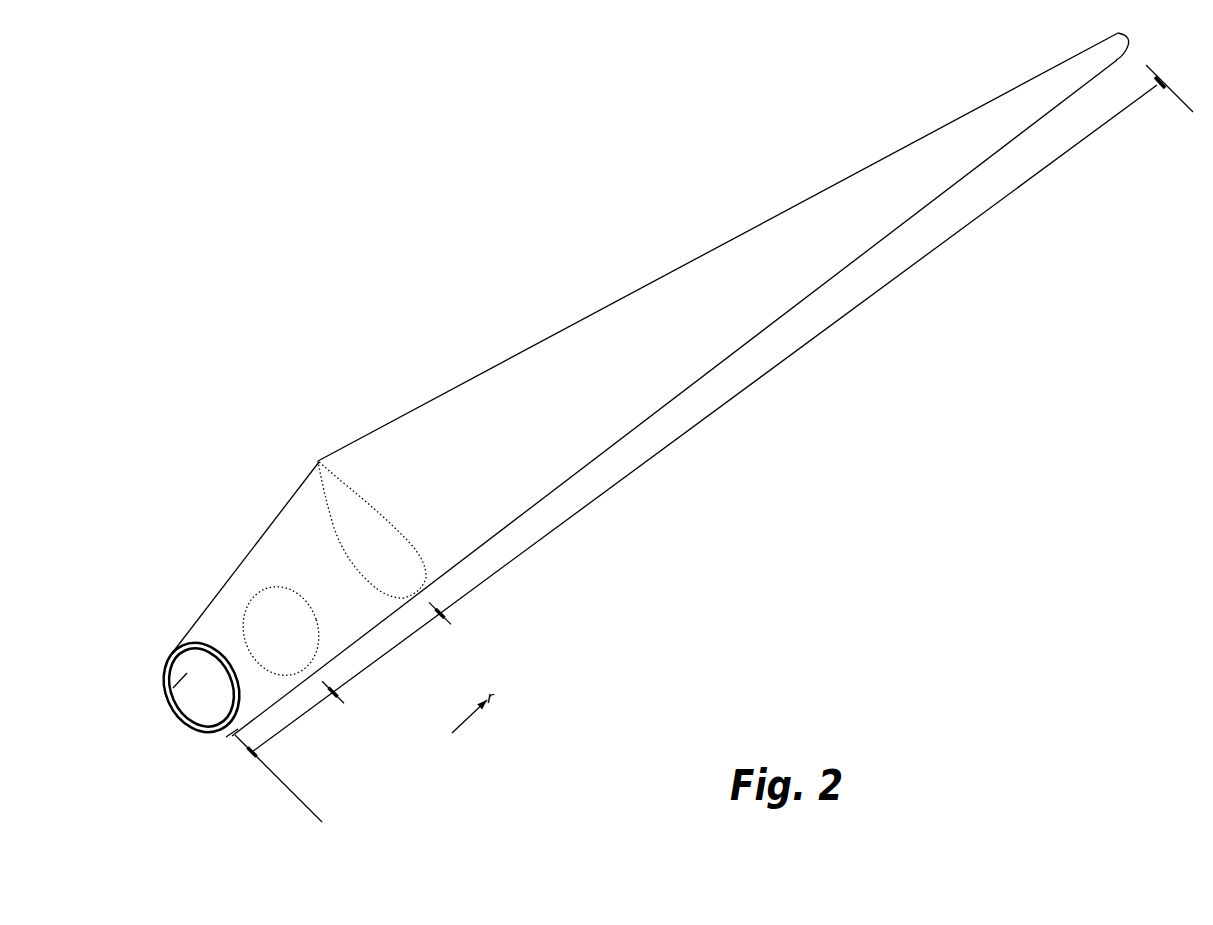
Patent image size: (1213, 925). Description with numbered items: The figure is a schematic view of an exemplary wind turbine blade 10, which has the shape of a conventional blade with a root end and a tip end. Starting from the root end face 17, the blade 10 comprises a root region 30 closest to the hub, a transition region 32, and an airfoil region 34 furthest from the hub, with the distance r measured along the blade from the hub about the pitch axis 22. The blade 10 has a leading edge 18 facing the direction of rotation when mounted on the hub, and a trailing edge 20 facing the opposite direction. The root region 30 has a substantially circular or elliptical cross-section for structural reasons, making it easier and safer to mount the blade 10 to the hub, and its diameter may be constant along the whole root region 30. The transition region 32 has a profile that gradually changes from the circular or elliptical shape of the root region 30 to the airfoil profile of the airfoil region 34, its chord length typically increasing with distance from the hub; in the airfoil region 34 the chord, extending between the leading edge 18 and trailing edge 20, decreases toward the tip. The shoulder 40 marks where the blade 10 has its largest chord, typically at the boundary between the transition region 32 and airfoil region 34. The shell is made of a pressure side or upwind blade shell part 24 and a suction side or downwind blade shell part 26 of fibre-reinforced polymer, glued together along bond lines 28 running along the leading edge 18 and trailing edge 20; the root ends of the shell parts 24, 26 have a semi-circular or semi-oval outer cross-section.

The wind turbine blade 10 is at (474, 254).
The root end face 17 is at (173, 688).
The leading edge 18 is at (833, 280).
The trailing edge 20 is at (707, 245).
The pitch axis 22 is at (190, 642).
The pressure side blade shell part 24 is at (208, 634).
The suction side blade shell part 26 is at (220, 728).
The bond lines 28 is at (226, 745).
The root region 30 is at (298, 721).
The transition region 32 is at (390, 650).
The airfoil region 34 is at (728, 398).
The shoulder 40 is at (318, 461).